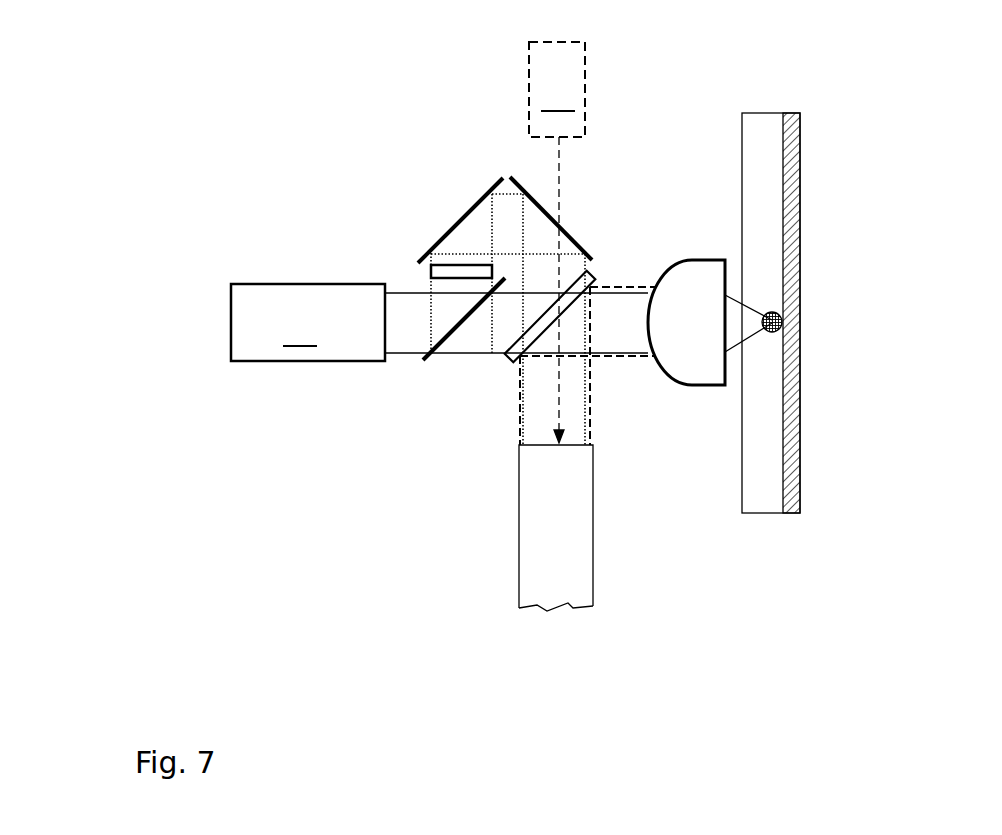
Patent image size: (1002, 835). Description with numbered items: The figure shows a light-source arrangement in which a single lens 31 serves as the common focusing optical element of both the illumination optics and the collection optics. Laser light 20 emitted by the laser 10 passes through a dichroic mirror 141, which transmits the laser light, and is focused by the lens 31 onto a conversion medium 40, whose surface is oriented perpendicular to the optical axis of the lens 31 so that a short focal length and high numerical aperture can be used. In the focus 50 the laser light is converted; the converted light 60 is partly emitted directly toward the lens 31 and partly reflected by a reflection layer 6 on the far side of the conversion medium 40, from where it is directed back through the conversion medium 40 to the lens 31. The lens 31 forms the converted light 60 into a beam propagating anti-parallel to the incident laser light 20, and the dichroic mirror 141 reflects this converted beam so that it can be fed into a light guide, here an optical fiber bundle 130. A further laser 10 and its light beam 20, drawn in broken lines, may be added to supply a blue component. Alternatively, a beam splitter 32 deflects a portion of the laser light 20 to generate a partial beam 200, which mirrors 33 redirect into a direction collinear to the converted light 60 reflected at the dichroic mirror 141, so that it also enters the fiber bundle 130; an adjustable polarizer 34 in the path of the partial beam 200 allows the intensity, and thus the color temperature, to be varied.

The reflection layer 6 is at (792, 112).
The laser 10 is at (408, 242).
The laser light 20 is at (562, 173).
The lens 31 is at (682, 262).
The beam splitter 32 is at (422, 363).
The mirrors 33 is at (557, 221).
The polarizer 34 is at (445, 268).
The conversion medium 40 is at (770, 470).
The focus 50 is at (783, 325).
The converted light 60 is at (628, 271).
The optical fiber bundle 130 is at (517, 590).
The dichroic mirror 141 is at (553, 325).
The partial beam 200 is at (431, 287).